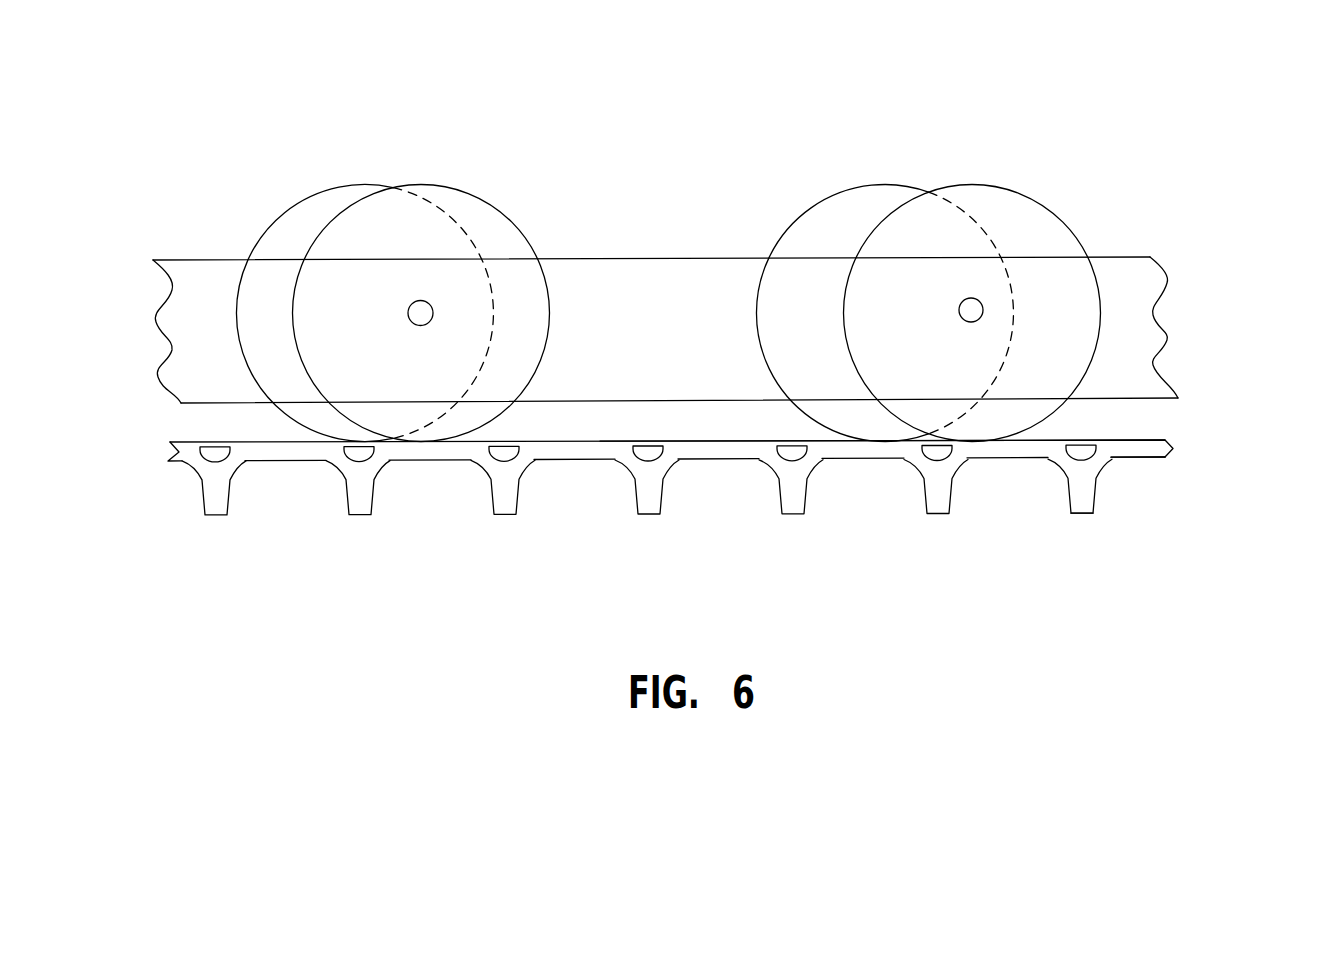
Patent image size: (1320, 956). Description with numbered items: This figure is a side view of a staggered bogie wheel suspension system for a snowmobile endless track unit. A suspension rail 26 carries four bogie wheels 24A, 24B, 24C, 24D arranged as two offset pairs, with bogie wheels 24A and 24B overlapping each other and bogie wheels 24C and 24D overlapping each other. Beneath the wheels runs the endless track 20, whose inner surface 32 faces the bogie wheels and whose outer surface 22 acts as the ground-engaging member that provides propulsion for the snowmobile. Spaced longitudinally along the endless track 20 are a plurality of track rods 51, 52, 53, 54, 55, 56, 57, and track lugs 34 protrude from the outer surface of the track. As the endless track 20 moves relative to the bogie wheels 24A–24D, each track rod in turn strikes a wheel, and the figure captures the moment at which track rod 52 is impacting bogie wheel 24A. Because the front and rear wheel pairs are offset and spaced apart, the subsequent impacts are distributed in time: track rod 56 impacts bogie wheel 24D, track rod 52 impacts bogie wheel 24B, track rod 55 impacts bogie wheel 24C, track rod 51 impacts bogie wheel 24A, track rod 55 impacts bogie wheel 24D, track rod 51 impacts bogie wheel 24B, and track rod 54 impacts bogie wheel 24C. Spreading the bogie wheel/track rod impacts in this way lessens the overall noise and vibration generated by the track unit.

The endless track 20 is at (1194, 448).
The outer surface 22 is at (1147, 458).
The bogie wheel 24A is at (292, 207).
The bogie wheel 24B is at (452, 188).
The bogie wheel 24C is at (862, 187).
The bogie wheel 24D is at (1003, 188).
The suspension rail 26 is at (680, 341).
The inner surface 32 is at (1158, 439).
The track lug 34 is at (1095, 493).
The track rod 51 is at (214, 462).
The track rod 52 is at (359, 462).
The track rod 53 is at (504, 462).
The track rod 54 is at (648, 461).
The track rod 55 is at (792, 461).
The track rod 56 is at (937, 460).
The track rod 57 is at (1081, 460).